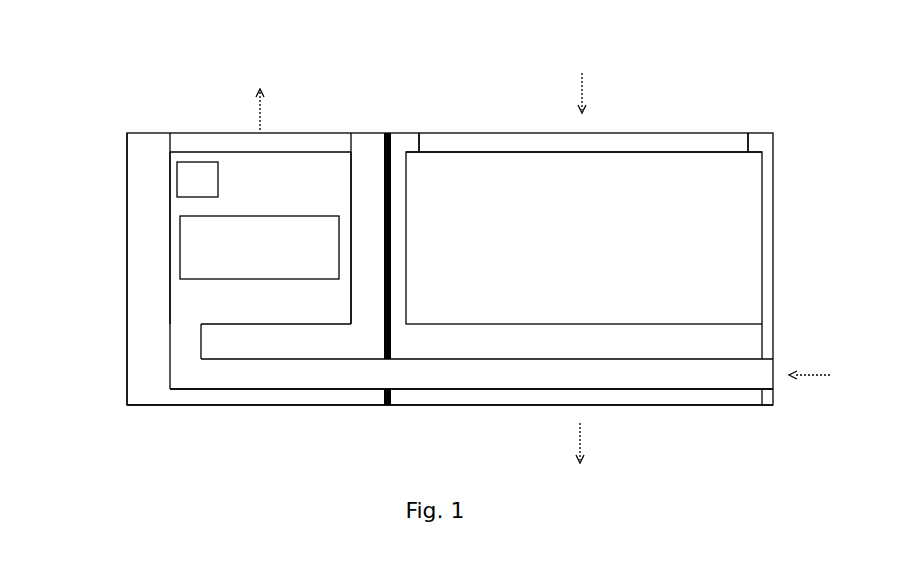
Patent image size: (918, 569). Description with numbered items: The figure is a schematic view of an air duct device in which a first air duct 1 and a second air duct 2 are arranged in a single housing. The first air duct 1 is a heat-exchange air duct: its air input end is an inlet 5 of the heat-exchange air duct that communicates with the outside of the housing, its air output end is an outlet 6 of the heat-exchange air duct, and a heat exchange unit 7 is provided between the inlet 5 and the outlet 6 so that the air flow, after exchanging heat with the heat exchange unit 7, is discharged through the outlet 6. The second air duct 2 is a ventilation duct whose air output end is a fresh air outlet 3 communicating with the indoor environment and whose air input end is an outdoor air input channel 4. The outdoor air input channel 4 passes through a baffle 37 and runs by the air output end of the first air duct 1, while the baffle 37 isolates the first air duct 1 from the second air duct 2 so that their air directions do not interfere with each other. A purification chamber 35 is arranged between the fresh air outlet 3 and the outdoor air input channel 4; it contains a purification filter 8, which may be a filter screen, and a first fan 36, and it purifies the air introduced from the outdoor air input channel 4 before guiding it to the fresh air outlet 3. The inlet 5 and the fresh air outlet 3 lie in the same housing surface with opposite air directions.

The first air duct 1 is at (775, 245).
The second air duct 2 is at (127, 302).
The fresh air outlet 3 is at (197, 143).
The outdoor air input channel 4 is at (282, 377).
The inlet of the heat-exchange air duct 5 is at (516, 138).
The outlet of the heat-exchange air duct 6 is at (635, 400).
The heat exchange unit 7 is at (653, 182).
The purification filter 8 is at (199, 262).
The purification chamber 35 is at (286, 182).
The first fan 36 is at (176, 178).
The baffle 37 is at (388, 133).